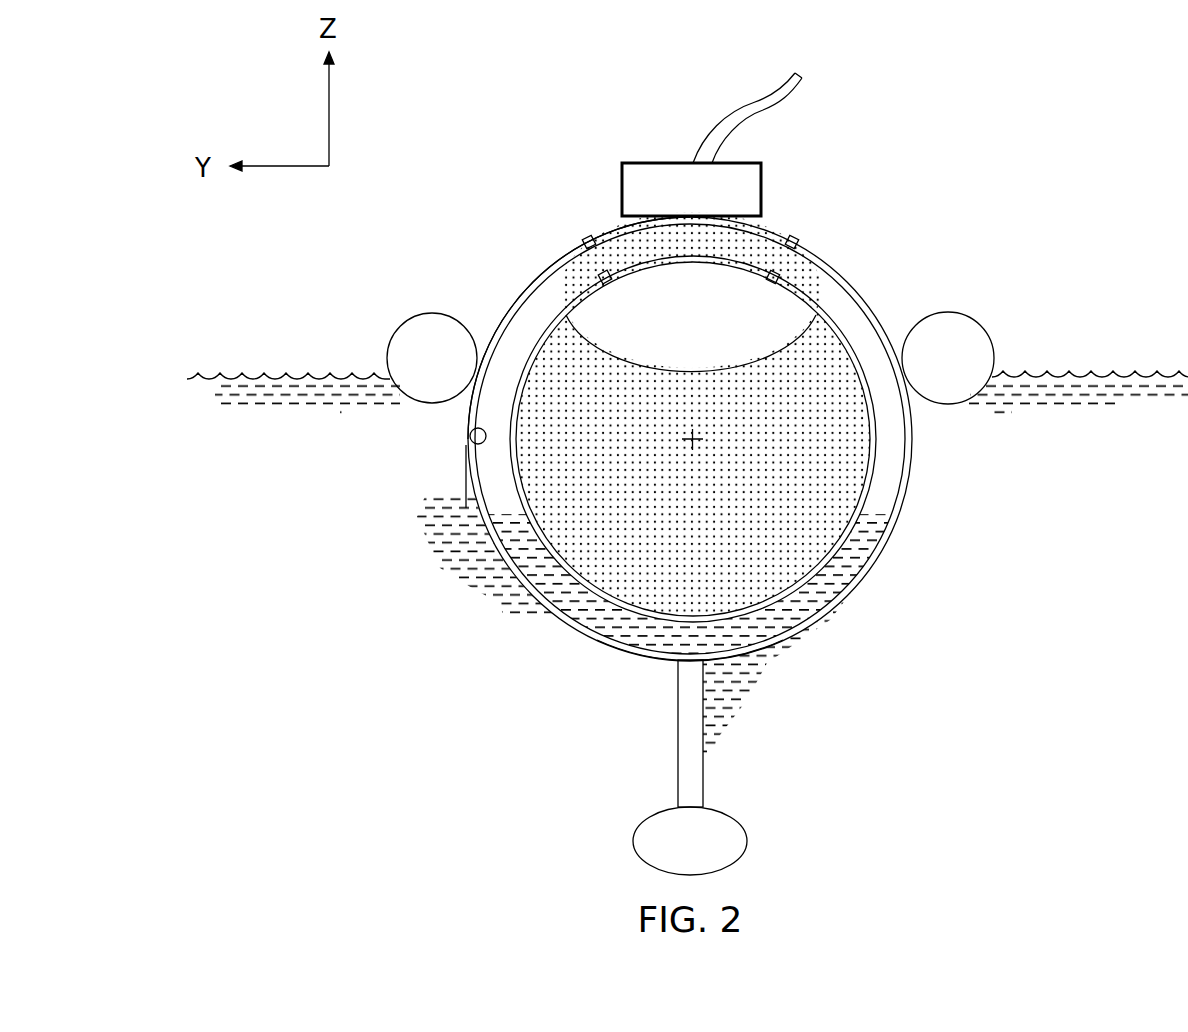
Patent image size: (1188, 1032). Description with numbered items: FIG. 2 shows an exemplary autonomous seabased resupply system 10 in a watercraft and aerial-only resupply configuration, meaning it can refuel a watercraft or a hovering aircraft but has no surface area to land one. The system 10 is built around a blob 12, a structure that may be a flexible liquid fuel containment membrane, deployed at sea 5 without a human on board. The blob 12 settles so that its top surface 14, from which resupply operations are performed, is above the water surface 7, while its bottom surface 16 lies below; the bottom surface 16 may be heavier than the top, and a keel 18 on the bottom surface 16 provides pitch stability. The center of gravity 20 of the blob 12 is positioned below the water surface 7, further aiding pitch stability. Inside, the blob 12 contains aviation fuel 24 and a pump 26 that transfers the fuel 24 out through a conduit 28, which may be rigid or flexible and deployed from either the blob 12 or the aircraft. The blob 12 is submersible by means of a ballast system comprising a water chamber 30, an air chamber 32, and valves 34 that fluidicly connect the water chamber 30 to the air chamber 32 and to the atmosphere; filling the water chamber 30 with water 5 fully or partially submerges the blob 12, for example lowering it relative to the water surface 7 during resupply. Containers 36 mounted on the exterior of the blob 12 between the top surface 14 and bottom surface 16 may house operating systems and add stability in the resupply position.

The sea 5 is at (272, 493).
The water surface 7 is at (200, 379).
The autonomous seabased resupply system 10 is at (998, 148).
The blob 12 is at (914, 462).
The top surface 14 is at (527, 282).
The bottom surface 16 is at (641, 662).
The keel 18 is at (677, 748).
The center of gravity 20 is at (695, 446).
The aviation fuel 24 is at (590, 453).
The pump 26 is at (651, 161).
The conduit 28 is at (729, 116).
The water chamber 30 is at (468, 432).
The air chamber 32 is at (672, 330).
The valves 34 is at (797, 240).
The containers 36 is at (966, 314).